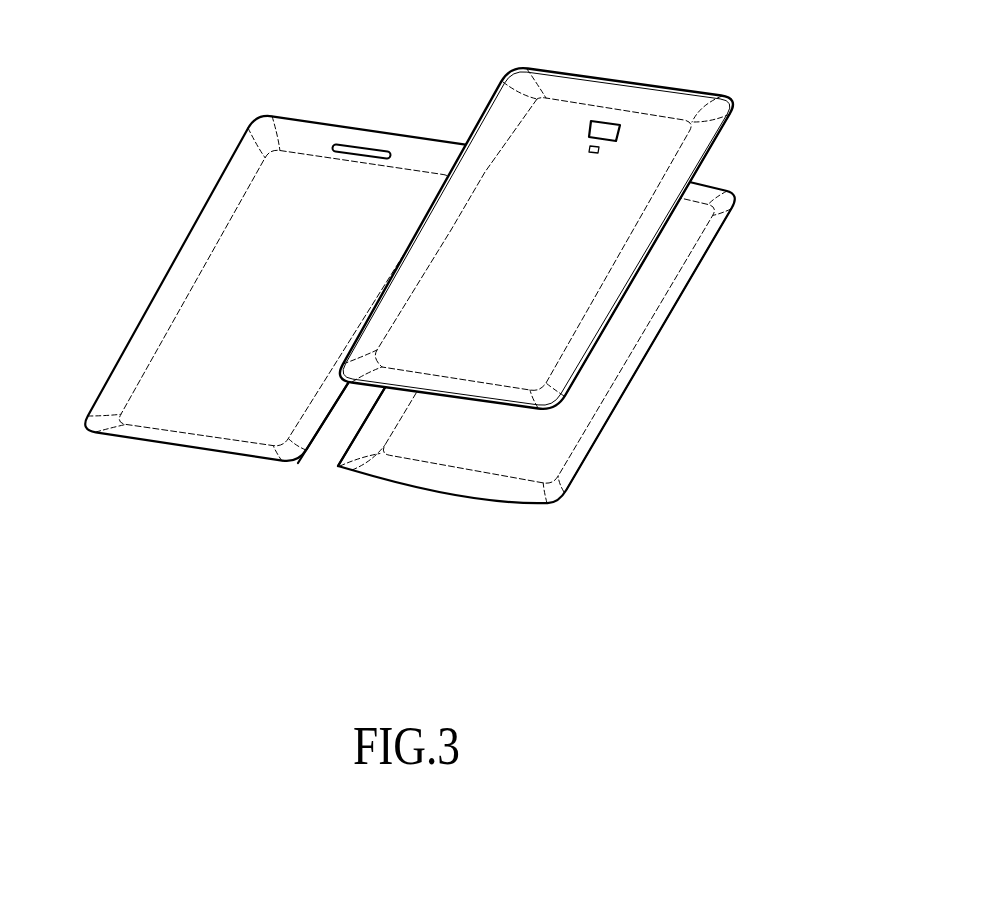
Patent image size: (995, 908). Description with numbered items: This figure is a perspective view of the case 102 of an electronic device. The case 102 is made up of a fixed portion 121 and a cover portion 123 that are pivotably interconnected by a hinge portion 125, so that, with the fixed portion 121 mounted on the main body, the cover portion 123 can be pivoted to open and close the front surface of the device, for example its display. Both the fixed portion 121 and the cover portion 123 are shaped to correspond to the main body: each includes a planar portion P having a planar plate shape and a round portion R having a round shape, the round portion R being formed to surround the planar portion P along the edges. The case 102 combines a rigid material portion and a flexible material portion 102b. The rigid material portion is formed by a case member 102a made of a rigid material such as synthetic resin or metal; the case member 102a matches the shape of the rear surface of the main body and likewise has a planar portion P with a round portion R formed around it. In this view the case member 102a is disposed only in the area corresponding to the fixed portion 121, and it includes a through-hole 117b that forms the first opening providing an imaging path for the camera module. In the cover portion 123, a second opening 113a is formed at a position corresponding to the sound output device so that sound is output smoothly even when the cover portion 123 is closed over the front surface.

The case 102 is at (721, 59).
The case member 102a is at (723, 137).
The flexible material portion 102b is at (638, 372).
The second opening 113a is at (363, 150).
The through-hole 117b is at (603, 123).
The fixed portion 121 is at (435, 500).
The cover portion 123 is at (128, 449).
The hinge portion 125 is at (307, 463).
The round portion R is at (228, 190).
The planar portion P is at (210, 293).